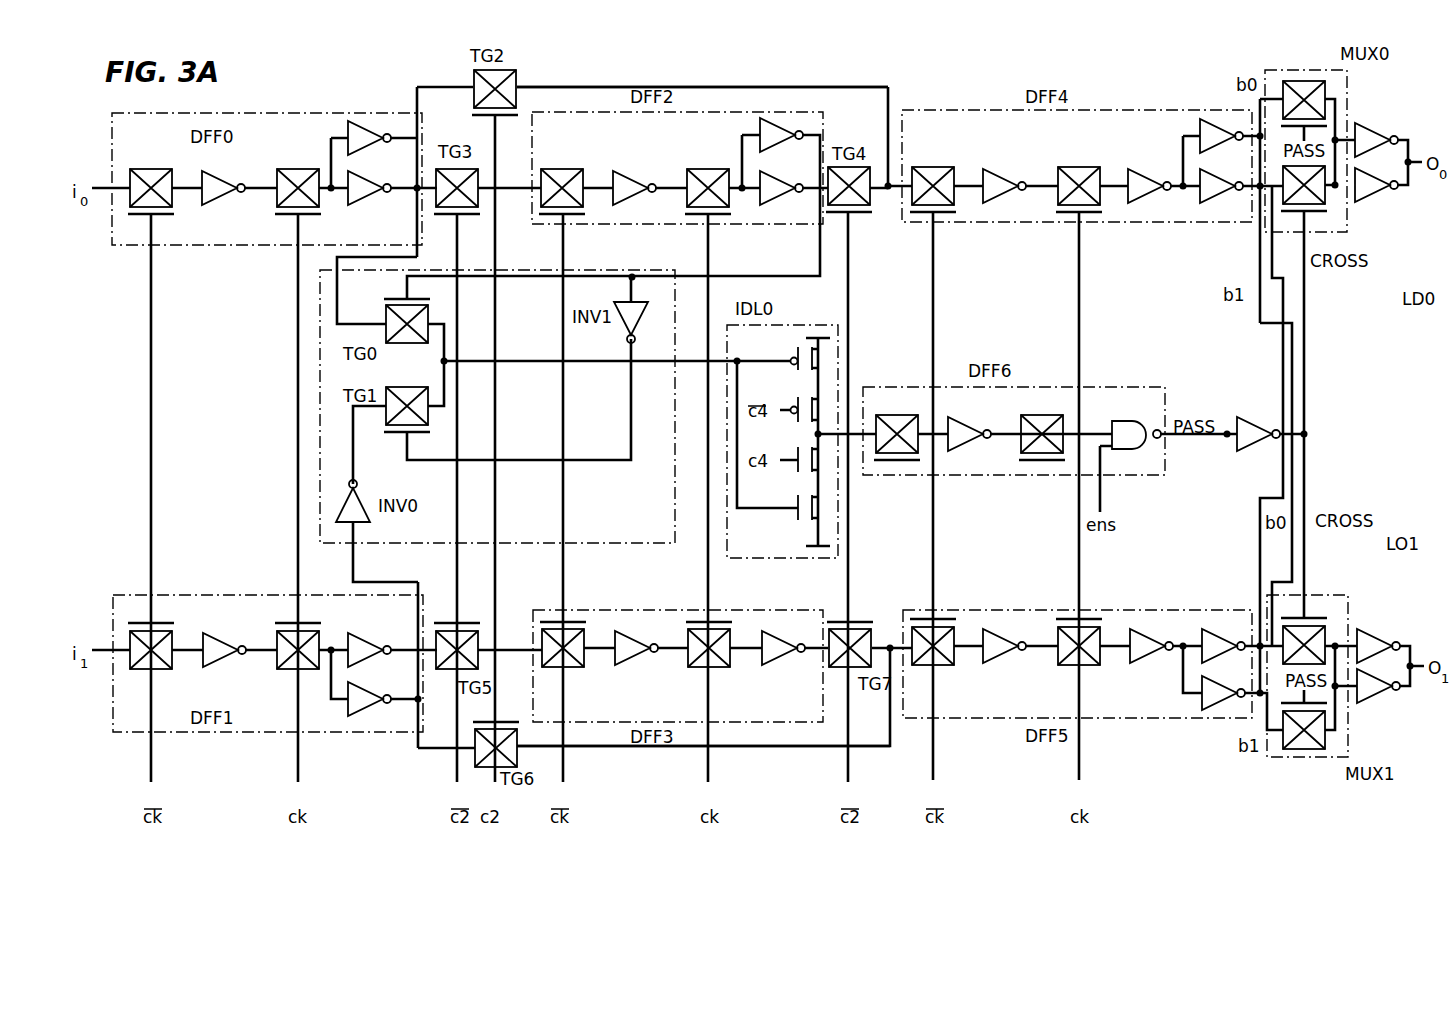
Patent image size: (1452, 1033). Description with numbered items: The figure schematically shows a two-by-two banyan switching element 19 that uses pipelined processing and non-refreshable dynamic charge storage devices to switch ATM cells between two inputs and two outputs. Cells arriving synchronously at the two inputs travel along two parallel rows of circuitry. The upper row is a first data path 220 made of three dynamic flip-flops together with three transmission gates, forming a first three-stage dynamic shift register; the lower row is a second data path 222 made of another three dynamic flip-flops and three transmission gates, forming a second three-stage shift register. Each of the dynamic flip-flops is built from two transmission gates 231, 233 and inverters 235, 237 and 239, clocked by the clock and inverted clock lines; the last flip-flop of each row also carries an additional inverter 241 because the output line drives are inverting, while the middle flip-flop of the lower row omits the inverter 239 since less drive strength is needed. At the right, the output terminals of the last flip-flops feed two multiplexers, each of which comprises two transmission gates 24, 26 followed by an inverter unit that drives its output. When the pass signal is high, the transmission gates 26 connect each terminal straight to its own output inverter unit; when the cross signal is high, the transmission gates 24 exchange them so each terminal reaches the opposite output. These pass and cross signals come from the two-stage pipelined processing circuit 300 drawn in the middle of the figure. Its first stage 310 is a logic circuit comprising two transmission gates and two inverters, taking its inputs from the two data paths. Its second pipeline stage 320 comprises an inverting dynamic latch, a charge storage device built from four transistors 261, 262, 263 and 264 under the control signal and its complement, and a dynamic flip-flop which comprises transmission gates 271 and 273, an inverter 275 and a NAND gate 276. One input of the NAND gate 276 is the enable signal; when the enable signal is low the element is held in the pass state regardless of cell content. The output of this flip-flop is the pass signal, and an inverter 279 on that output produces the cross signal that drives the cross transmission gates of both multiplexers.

The banyan switching element 19 is at (326, 853).
The transmission gate 24 is at (1325, 196).
The transmission gate 26 is at (1325, 92).
The first data path 220 is at (874, 71).
The second data path 222 is at (750, 759).
The transmission gate 231 is at (147, 166).
The transmission gate 233 is at (292, 169).
The inverter 235 is at (219, 176).
The inverter 237 is at (378, 121).
The inverter 239 is at (373, 198).
The additional inverter 241 is at (1140, 165).
The transistor 261 is at (820, 340).
The transistor 262 is at (818, 404).
The transistor 263 is at (812, 468).
The transistor 264 is at (812, 508).
The transmission gate 271 is at (904, 414).
The transmission gate 273 is at (1060, 413).
The inverter 275 is at (964, 434).
The NAND gate 276 is at (1132, 449).
The inverter 279 is at (1253, 418).
The two-stage pipelined processing circuit 300 is at (138, 433).
The first stage 310 is at (320, 349).
The second pipeline stage 320 is at (898, 372).